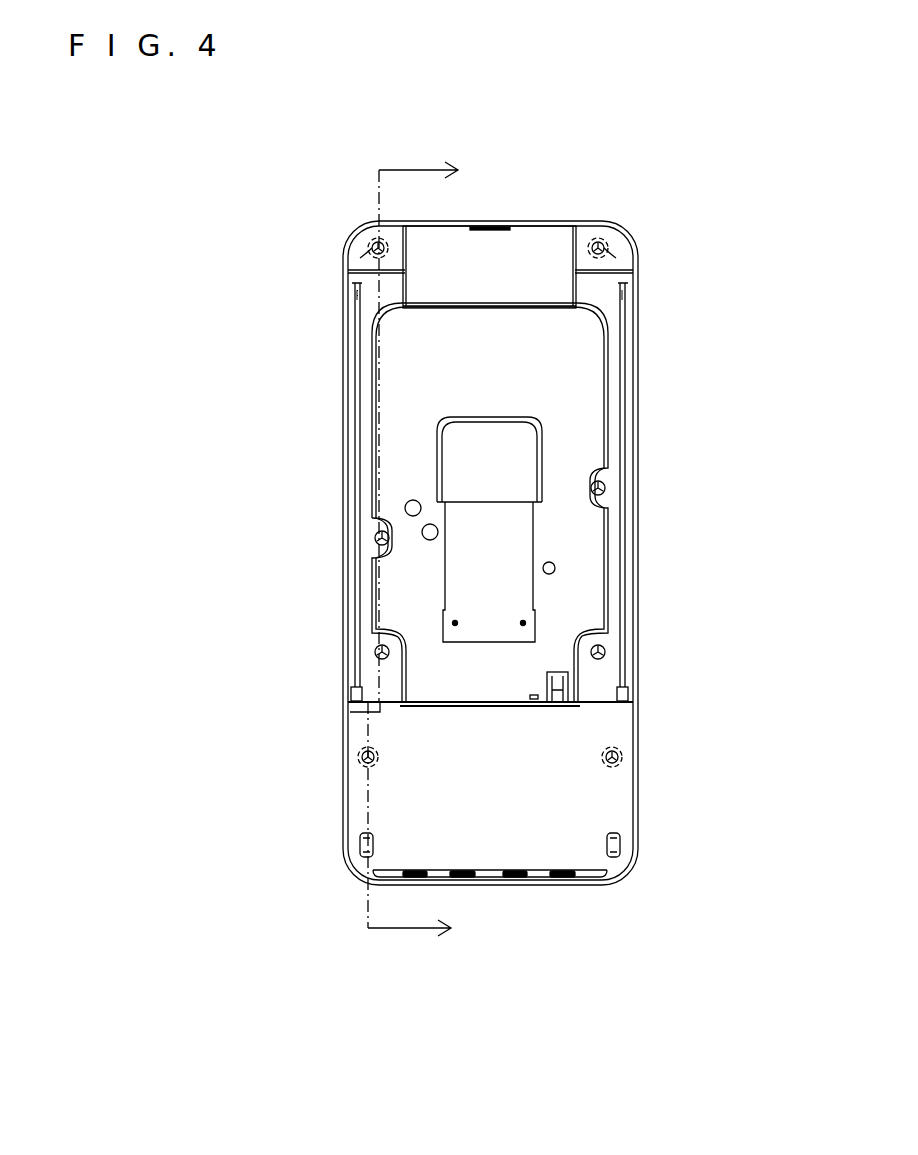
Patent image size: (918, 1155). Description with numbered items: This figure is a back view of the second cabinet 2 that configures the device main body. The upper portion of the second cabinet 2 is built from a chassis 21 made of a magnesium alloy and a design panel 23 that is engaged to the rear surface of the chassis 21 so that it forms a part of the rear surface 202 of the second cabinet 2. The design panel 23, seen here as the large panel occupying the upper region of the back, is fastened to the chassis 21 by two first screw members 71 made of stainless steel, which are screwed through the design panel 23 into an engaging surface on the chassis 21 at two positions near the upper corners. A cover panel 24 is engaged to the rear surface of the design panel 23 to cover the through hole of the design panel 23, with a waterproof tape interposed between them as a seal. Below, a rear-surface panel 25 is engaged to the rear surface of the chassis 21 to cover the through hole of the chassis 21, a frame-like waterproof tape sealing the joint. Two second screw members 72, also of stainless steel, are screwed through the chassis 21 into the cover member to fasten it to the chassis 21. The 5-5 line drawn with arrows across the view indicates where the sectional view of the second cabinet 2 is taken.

The second cabinet 2 is at (584, 214).
The 5-5 line 5 is at (409, 552).
The chassis 21 is at (637, 410).
The design panel 23 is at (526, 247).
The cover panel 24 is at (362, 257).
The rear-surface panel 25 is at (540, 853).
The first screw member 71 is at (362, 233).
The second screw member 72 is at (357, 773).
The rear surface 202 is at (578, 430).